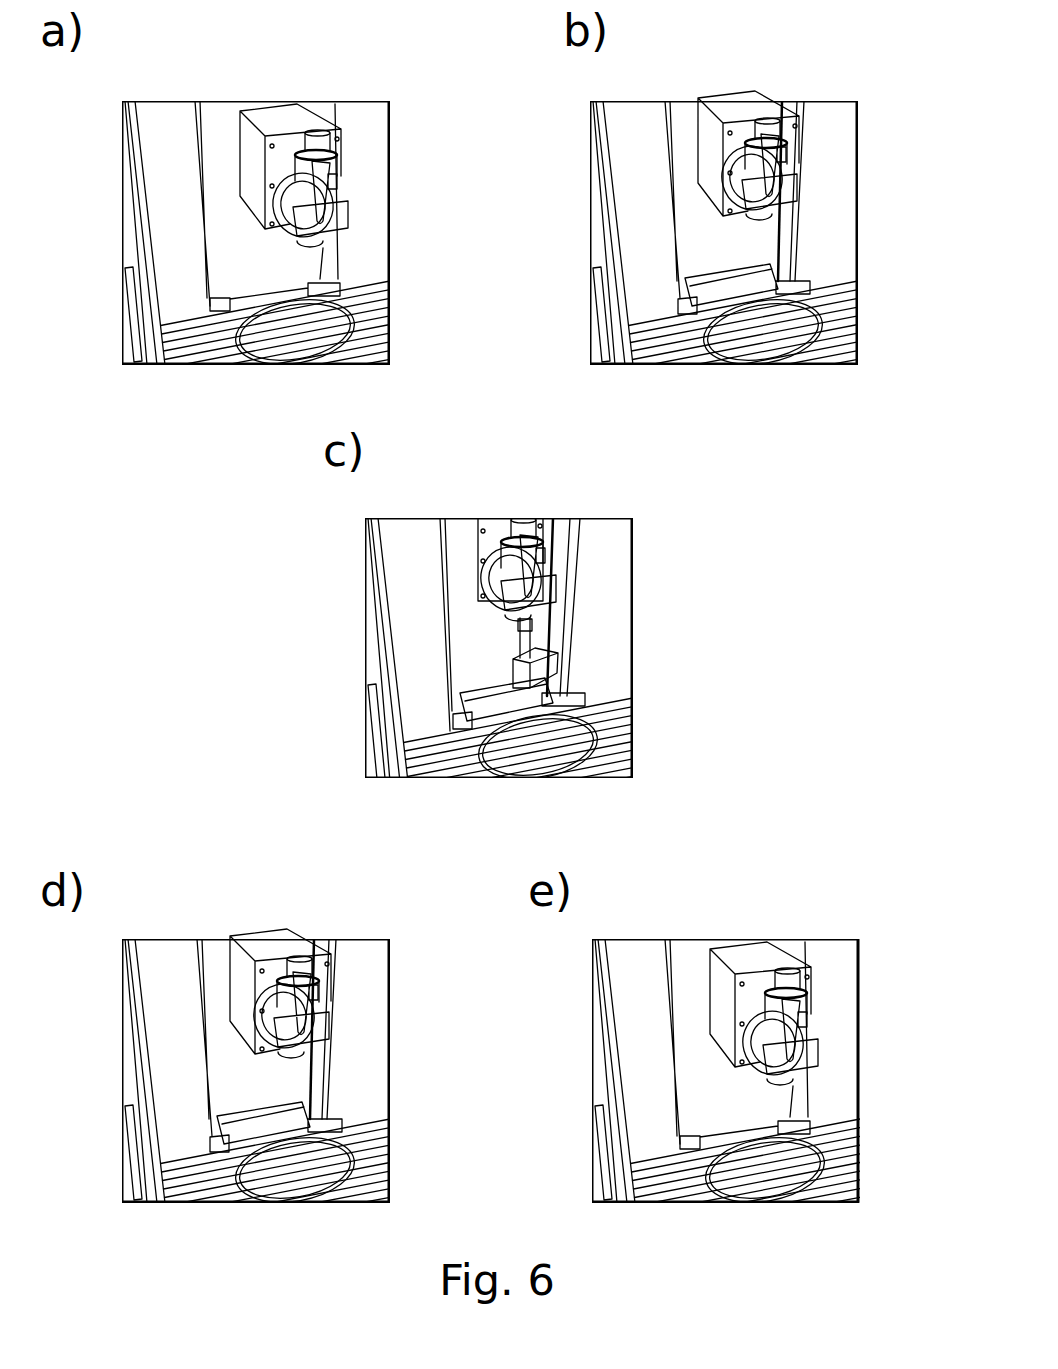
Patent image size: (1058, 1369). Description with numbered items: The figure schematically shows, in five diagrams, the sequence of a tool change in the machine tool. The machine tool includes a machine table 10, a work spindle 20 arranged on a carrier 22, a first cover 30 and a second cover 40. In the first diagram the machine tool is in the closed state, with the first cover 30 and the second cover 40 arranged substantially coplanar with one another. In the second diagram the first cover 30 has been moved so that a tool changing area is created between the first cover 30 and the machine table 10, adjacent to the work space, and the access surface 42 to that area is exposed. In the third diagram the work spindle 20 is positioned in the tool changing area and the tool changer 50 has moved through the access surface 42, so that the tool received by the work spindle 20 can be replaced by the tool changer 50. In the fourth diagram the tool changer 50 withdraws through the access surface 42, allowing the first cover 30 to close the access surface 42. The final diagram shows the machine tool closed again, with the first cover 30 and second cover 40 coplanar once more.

The machine table 10 is at (408, 340).
The work spindle 20 is at (360, 210).
The carrier 22 is at (297, 117).
The first cover 30 is at (227, 128).
The second cover 40 is at (168, 128).
The access surface 42 is at (788, 230).
The tool changer 50 is at (543, 668).